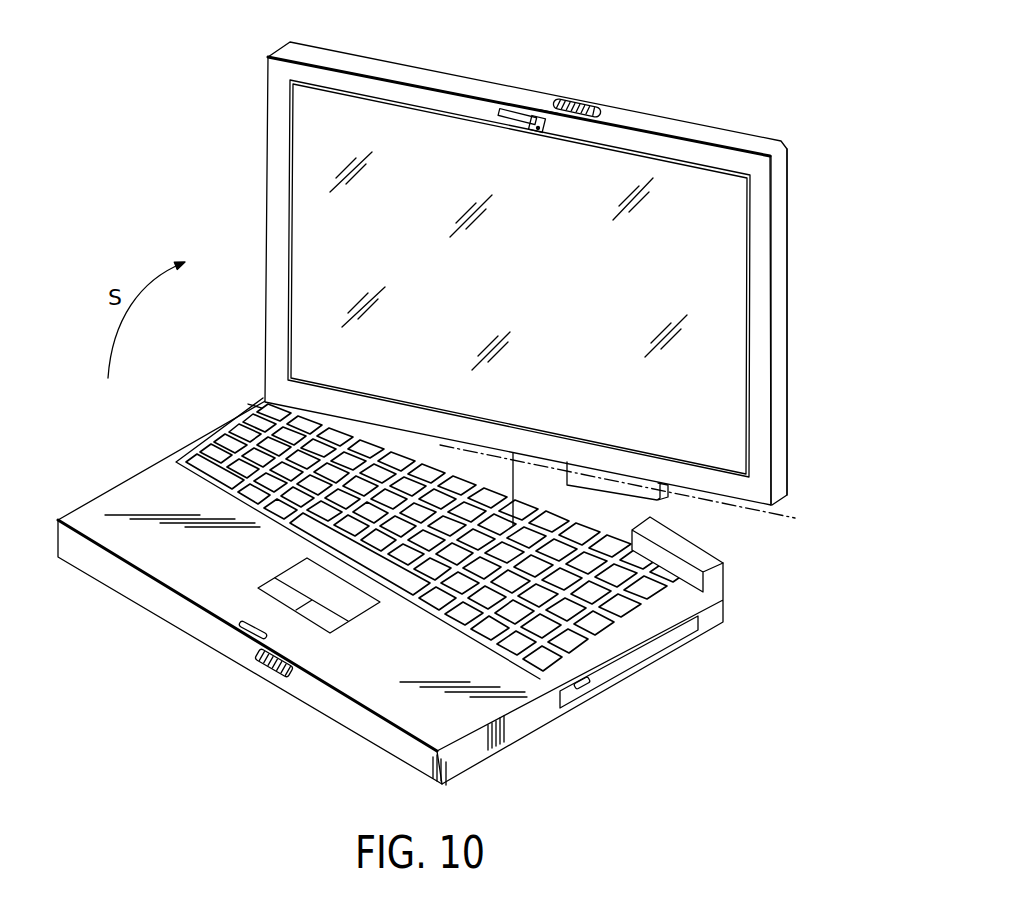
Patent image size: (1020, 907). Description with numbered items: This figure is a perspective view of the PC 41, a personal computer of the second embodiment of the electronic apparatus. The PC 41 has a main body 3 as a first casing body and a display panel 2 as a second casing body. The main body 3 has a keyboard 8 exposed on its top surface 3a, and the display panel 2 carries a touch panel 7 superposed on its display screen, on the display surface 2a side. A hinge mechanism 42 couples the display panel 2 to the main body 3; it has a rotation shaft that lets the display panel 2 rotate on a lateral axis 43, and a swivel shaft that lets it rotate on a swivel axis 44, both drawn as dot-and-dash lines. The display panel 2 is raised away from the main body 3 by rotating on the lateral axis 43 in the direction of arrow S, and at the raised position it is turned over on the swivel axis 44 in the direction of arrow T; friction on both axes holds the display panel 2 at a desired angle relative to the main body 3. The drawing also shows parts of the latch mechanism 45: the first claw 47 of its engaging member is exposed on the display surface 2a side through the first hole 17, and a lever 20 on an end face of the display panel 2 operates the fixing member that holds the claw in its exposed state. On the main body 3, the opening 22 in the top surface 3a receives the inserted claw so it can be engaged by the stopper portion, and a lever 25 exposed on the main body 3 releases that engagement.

The display panel 2 is at (708, 136).
The display surface 2a is at (758, 345).
The main body 3 is at (512, 728).
The top surface 3a is at (95, 520).
The touch panel 7 is at (720, 245).
The keyboard 8 is at (570, 617).
The first hole 17 is at (505, 120).
The lever 20 is at (578, 100).
The opening 22 is at (243, 626).
The lever 25 is at (270, 668).
The PC 41 is at (213, 150).
The hinge mechanism 42 is at (542, 446).
The lateral axis 43 is at (252, 405).
The swivel axis 44 is at (520, 385).
The latch mechanism 45 is at (529, 76).
The first claw 47 is at (540, 132).